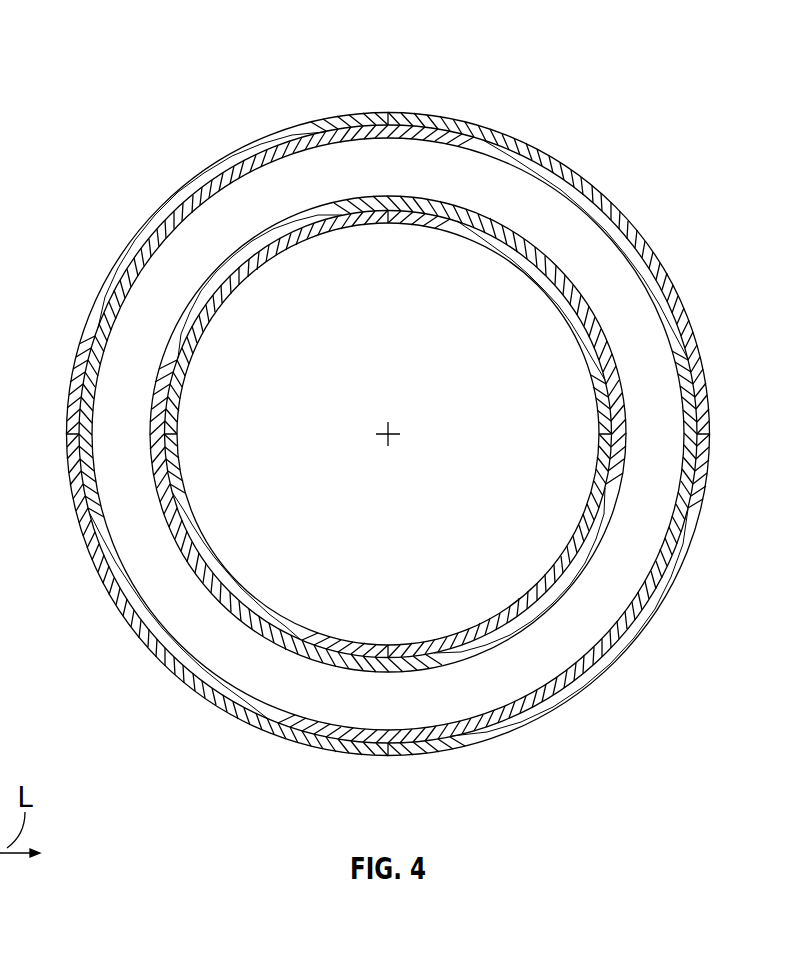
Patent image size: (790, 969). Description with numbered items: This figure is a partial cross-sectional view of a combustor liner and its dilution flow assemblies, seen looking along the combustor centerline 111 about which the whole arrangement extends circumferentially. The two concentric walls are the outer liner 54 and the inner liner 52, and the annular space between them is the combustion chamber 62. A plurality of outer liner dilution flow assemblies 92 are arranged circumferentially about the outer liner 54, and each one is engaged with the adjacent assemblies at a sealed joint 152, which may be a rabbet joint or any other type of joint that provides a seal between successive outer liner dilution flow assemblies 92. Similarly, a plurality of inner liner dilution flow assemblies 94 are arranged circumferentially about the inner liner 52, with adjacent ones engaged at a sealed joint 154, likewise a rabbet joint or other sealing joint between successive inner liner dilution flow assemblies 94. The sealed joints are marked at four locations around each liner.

The inner liner 52 is at (313, 217).
The outer liner 54 is at (577, 186).
The combustion chamber 62 is at (227, 230).
The outer liner dilution flow assemblies 92 is at (278, 140).
The inner liner dilution flow assemblies 94 is at (258, 262).
The combustor centerline 111 is at (392, 440).
The sealed joint 152 is at (390, 106).
The sealed joint 154 is at (387, 232).